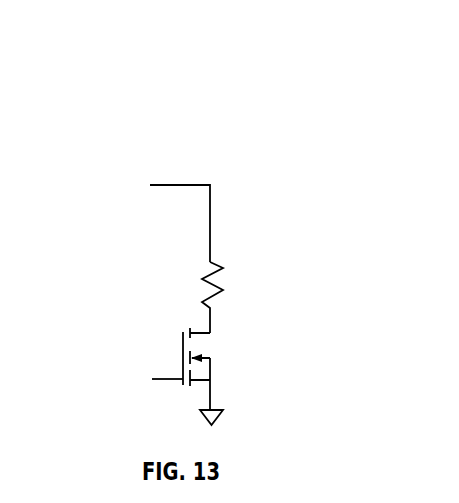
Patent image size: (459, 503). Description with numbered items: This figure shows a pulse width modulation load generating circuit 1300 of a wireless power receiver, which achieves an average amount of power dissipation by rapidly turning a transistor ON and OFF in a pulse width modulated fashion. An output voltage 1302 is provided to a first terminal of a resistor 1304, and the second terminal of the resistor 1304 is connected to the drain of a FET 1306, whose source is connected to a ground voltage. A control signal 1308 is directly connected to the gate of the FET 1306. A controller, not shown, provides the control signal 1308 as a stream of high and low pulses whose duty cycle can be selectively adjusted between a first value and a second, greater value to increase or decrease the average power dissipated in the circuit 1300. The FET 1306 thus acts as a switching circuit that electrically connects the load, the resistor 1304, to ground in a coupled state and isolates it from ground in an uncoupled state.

The pulse width modulation load generating circuit 1300 is at (103, 104).
The voltage (Vout) 1302 is at (134, 167).
The resistor (R1) 1304 is at (238, 263).
The FET (M1) 1306 is at (237, 345).
The control signal 1308 is at (120, 372).